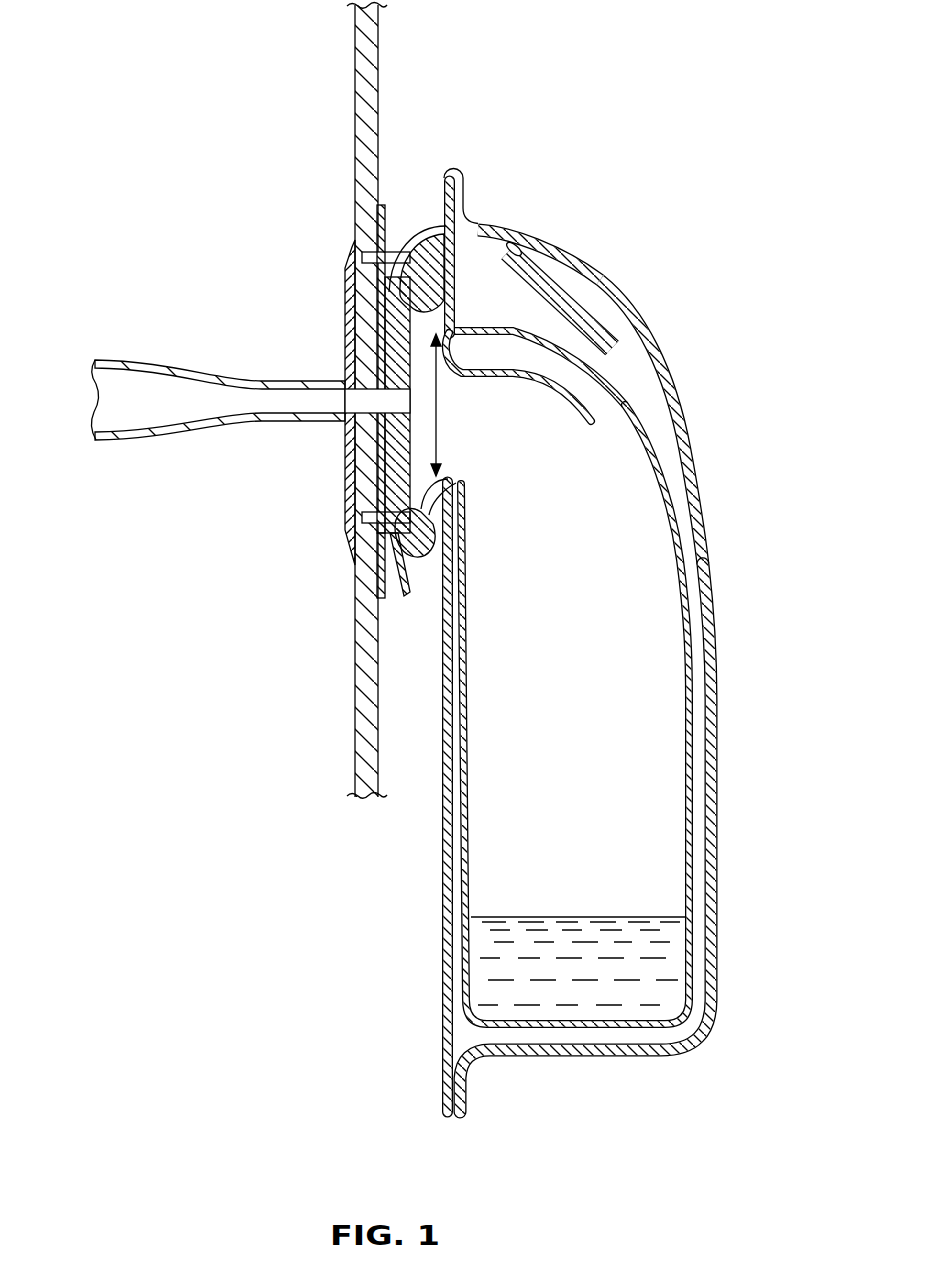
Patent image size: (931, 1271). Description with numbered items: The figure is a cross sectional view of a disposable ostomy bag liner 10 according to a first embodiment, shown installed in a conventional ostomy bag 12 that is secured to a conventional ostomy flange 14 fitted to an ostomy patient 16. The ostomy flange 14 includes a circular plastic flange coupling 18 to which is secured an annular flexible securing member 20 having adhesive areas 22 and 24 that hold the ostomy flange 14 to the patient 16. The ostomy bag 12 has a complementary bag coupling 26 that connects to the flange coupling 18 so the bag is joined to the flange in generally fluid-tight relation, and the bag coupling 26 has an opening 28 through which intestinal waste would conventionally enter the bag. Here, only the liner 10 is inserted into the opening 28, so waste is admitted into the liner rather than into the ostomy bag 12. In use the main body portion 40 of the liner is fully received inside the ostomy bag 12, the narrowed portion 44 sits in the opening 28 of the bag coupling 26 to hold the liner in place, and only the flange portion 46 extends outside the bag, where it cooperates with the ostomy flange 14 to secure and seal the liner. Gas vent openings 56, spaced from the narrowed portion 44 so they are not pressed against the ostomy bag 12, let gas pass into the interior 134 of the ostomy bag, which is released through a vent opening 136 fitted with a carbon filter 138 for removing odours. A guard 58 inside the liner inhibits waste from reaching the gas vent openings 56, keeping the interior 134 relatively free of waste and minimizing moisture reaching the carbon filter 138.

The disposable ostomy bag liner 10 is at (640, 403).
The ostomy bag 12 is at (645, 340).
The ostomy flange 14 is at (401, 203).
The ostomy patient 16 is at (310, 67).
The flange coupling 18 is at (397, 478).
The securing member 20 is at (391, 592).
The adhesive area 22 is at (377, 222).
The adhesive area 24 is at (377, 587).
The bag coupling 26 is at (423, 560).
The opening 28 is at (437, 393).
The main body portion 40 is at (703, 555).
The narrowed portion 44 is at (459, 345).
The flange portion 46 is at (445, 280).
The gas vent openings 56 is at (490, 328).
The first guard 58 is at (550, 382).
The interior 134 is at (512, 298).
The vent opening 136 is at (598, 282).
The carbon filter 138 is at (563, 267).